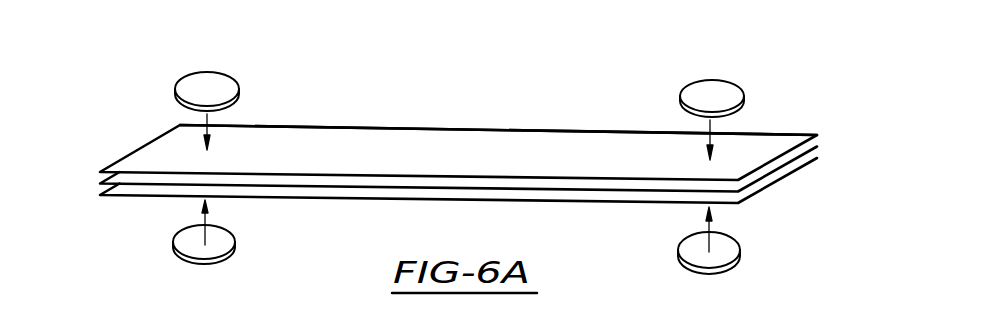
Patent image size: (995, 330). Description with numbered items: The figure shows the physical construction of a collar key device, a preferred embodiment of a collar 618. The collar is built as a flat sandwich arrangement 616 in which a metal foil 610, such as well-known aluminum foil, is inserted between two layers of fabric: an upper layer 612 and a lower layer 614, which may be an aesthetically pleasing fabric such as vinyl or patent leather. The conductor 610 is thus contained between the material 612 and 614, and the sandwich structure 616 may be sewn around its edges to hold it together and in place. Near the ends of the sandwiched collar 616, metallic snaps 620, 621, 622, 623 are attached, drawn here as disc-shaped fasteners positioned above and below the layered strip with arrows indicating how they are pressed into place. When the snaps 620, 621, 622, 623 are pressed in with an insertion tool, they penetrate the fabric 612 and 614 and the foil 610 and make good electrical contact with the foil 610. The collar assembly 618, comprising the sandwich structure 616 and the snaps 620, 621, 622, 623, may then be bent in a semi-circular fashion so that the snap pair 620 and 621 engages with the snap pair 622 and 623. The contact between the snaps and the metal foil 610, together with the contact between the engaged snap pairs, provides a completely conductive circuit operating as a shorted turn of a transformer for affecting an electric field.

The collar 618 is at (118, 57).
The upper layer 612 is at (808, 133).
The metal foil 610 is at (813, 150).
The lower layer 614 is at (813, 159).
The sandwich arrangement 616 is at (430, 116).
The metallic snap 620 is at (232, 80).
The metallic snap 621 is at (235, 238).
The metallic snap 622 is at (740, 248).
The metallic snap 623 is at (735, 83).